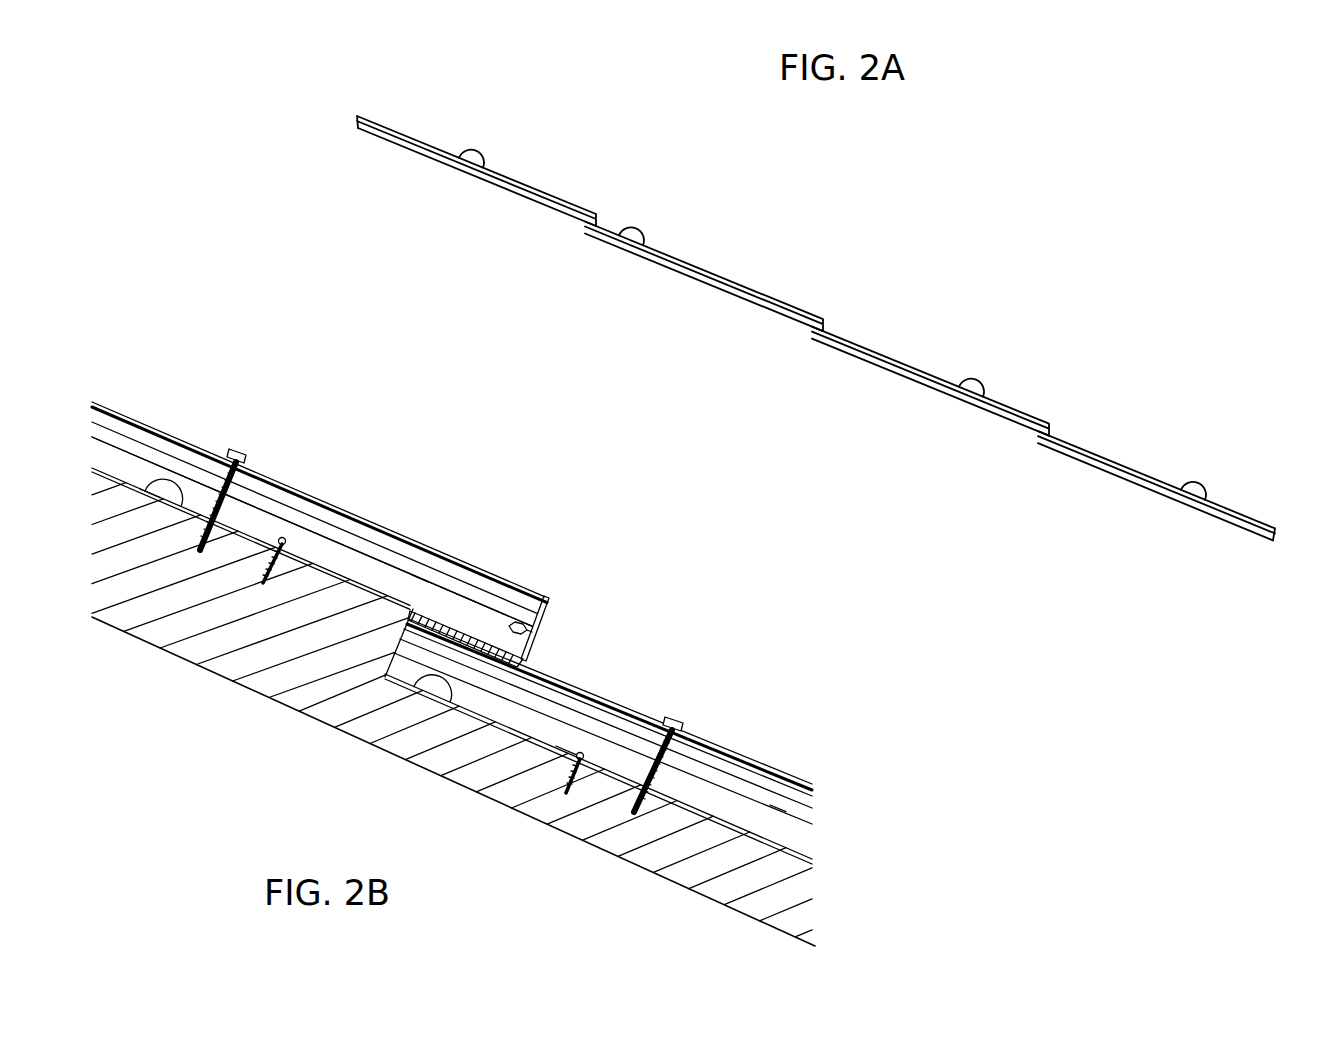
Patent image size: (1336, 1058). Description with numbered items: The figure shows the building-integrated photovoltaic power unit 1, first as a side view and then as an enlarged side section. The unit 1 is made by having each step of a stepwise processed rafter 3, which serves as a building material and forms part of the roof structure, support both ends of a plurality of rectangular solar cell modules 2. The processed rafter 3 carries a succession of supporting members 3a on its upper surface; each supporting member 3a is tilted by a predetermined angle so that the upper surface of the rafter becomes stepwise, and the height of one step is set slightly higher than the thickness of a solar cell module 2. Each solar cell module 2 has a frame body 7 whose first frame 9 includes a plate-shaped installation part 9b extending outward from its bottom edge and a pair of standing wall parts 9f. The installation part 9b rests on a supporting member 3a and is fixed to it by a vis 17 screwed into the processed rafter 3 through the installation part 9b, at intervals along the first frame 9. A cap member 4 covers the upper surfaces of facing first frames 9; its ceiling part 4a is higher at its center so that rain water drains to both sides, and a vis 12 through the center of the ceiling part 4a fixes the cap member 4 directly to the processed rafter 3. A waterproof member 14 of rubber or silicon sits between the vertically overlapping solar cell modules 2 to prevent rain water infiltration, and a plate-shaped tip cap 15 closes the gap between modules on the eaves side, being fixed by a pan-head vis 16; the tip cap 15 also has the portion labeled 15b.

In FIG. 2A, the building-integrated photovoltaic power unit 1 is at (1080, 186).
In FIG. 2A, the solar cell module 2 is at (520, 183).
In FIG. 2B, the solar cell module 2 is at (311, 491).
In FIG. 2A, the processed rafter 3 is at (751, 302).
In FIG. 2B, the processed rafter 3 is at (326, 727).
In FIG. 2A, the supporting member 3a is at (465, 158).
In FIG. 2B, the supporting member 3a is at (160, 498).
In FIG. 2B, the cap member 4 is at (264, 466).
In FIG. 2B, the ceiling part 4a is at (358, 516).
In FIG. 2B, the frame body 7 is at (319, 572).
In FIG. 2B, the first frame 9 is at (319, 572).
In FIG. 2B, the installation part 9b is at (142, 486).
In FIG. 2B, the standing wall parts 9f is at (418, 594).
In FIG. 2B, the vis 12 is at (239, 449).
In FIG. 2B, the waterproof member 14 is at (470, 638).
In FIG. 2B, the tip cap 15 is at (556, 601).
In FIG. 2B, the cover end portion 15b is at (541, 597).
In FIG. 2B, the pan-head vis 16 is at (528, 641).
In FIG. 2B, the vis 17 is at (268, 585).